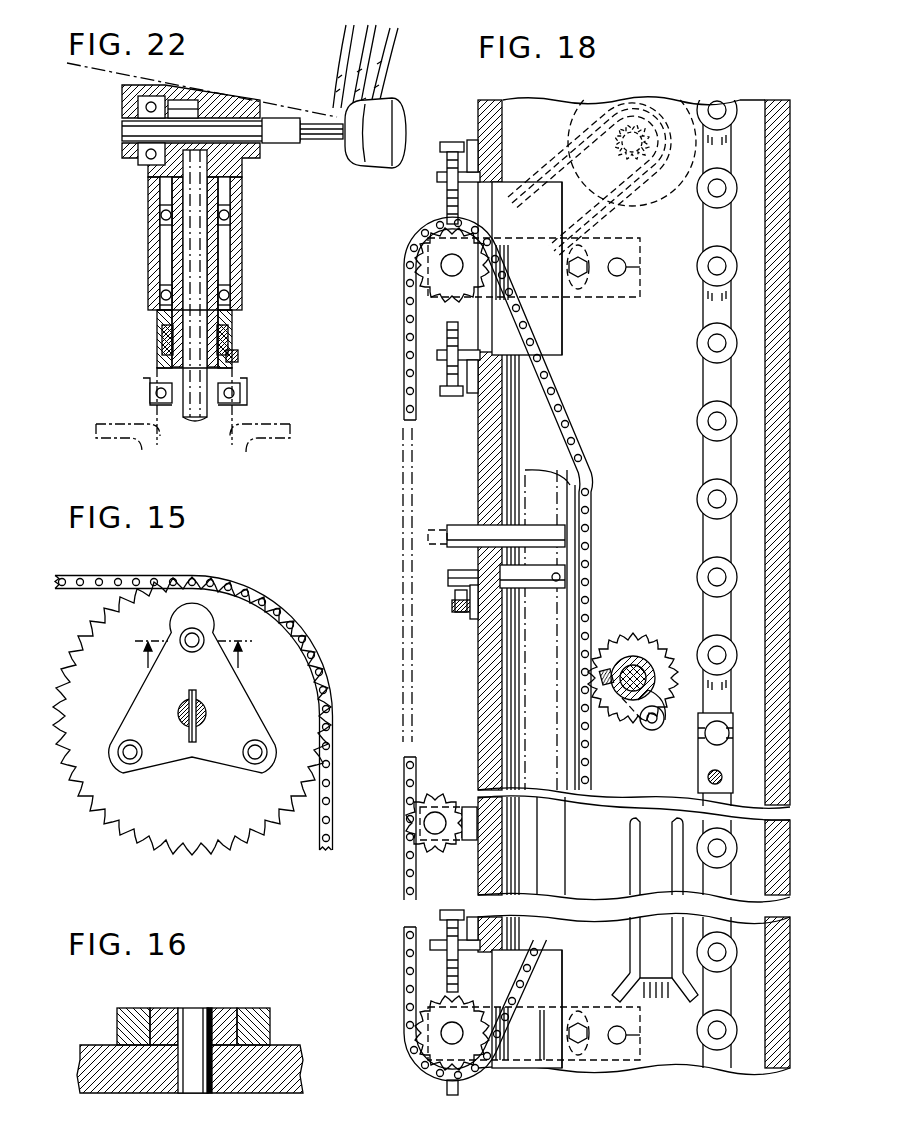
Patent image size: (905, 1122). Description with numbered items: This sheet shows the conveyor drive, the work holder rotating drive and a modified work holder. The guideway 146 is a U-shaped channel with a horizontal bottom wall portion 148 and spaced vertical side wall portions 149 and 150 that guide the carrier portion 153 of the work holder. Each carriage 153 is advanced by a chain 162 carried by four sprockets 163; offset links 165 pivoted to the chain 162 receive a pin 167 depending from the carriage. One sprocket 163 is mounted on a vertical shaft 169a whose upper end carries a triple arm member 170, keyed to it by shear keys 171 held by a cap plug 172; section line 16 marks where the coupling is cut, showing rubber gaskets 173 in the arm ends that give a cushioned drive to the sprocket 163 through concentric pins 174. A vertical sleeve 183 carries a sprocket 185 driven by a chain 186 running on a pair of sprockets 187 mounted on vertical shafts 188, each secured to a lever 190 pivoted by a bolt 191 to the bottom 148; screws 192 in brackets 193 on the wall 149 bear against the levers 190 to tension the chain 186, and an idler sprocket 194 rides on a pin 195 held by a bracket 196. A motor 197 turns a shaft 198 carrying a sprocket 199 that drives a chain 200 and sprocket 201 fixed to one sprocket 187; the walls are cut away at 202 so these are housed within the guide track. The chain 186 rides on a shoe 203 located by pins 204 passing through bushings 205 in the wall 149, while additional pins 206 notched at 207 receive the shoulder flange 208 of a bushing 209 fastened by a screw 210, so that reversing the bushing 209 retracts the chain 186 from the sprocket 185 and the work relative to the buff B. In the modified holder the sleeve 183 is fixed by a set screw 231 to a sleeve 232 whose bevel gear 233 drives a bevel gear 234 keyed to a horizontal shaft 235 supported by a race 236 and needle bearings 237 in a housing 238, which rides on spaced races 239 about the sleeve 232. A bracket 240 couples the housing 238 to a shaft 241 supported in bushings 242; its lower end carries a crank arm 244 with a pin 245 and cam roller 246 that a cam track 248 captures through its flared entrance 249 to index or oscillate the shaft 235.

In FIG. 22, the buff B is at (392, 53).
In FIG. 18, the vertical side wall portion 150 is at (788, 72).
In FIG. 18, the horizontal bottom wall portion 148 is at (676, 353).
In FIG. 18, the vertical side wall portion 149 is at (484, 446).
In FIG. 18, the guideway 146 is at (478, 697).
In FIG. 22, the carrier portion 153 is at (258, 428).
In FIG. 15, the chain 162 is at (90, 575).
In FIG. 18, the chain 162 is at (703, 380).
In FIG. 15, the sprocket 163 is at (200, 812).
In FIG. 16, the sprocket 163 is at (288, 1070).
In FIG. 18, the offset link 165 is at (705, 756).
In FIG. 18, the pin 167 is at (708, 777).
In FIG. 15, the vertical shaft 169a is at (180, 712).
In FIG. 15, the triple arm member 170 is at (250, 735).
In FIG. 16, the triple arm member 170 is at (265, 1028).
In FIG. 15, the shear key 171 is at (194, 690).
In FIG. 15, the cap plug 172 is at (206, 713).
In FIG. 16, the rubber gasket 173 is at (226, 1010).
In FIG. 16, the concentric pin 174 is at (196, 1018).
In FIG. 22, the vertical sleeve 183 is at (170, 408).
In FIG. 18, the vertical sleeve 183 is at (618, 660).
In FIG. 18, the sprocket 185 is at (652, 648).
In FIG. 18, the chain 186 is at (403, 409).
In FIG. 18, the sprocket 187 is at (417, 270).
In FIG. 18, the vertical shaft 188 is at (445, 262).
In FIG. 18, the lever 190 is at (566, 302).
In FIG. 18, the bolt 191 is at (640, 267).
In FIG. 18, the screw 192 is at (447, 202).
In FIG. 18, the bracket 193 is at (437, 176).
In FIG. 18, the idler sprocket 194 is at (418, 845).
In FIG. 18, the pin 195 is at (424, 823).
In FIG. 18, the bracket 196 is at (470, 842).
In FIG. 18, the motor 197 is at (664, 205).
In FIG. 18, the shaft 198 is at (643, 142).
In FIG. 18, the sprocket 199 is at (620, 156).
In FIG. 18, the chain 200 is at (548, 152).
In FIG. 18, the sprocket 201 is at (500, 312).
In FIG. 18, the cut-away 202 is at (562, 343).
In FIG. 18, the shoe 203 is at (590, 505).
In FIG. 18, the pin 204 is at (462, 533).
In FIG. 18, the bushing 205 is at (500, 470).
In FIG. 18, the pin 206 is at (510, 590).
In FIG. 18, the notch 207 is at (455, 580).
In FIG. 18, the shoulder flange 208 is at (468, 616).
In FIG. 18, the bushing 209 is at (452, 606).
In FIG. 18, the screw 210 is at (455, 594).
In FIG. 22, the set screw 231 is at (238, 356).
In FIG. 22, the sleeve 232 is at (232, 320).
In FIG. 22, the bevel gear 233 is at (228, 165).
In FIG. 22, the bevel gear 234 is at (160, 98).
In FIG. 22, the horizontal shaft 235 is at (128, 130).
In FIG. 22, the race 236 is at (138, 155).
In FIG. 22, the needle bearings 237 is at (263, 115).
In FIG. 22, the housing 238 is at (248, 98).
In FIG. 22, the race 239 is at (160, 215).
In FIG. 22, the bracket 240 is at (212, 105).
In FIG. 22, the shaft 241 is at (200, 258).
In FIG. 18, the shaft 241 is at (636, 656).
In FIG. 22, the bushing 242 is at (172, 190).
In FIG. 18, the crank arm 244 is at (640, 722).
In FIG. 18, the pin 245 is at (646, 728).
In FIG. 18, the cam roller 246 is at (656, 728).
In FIG. 18, the cam track 248 is at (636, 850).
In FIG. 18, the flared entrance 249 is at (624, 994).
In FIG. 15, the line 16— 16 is at (193, 646).